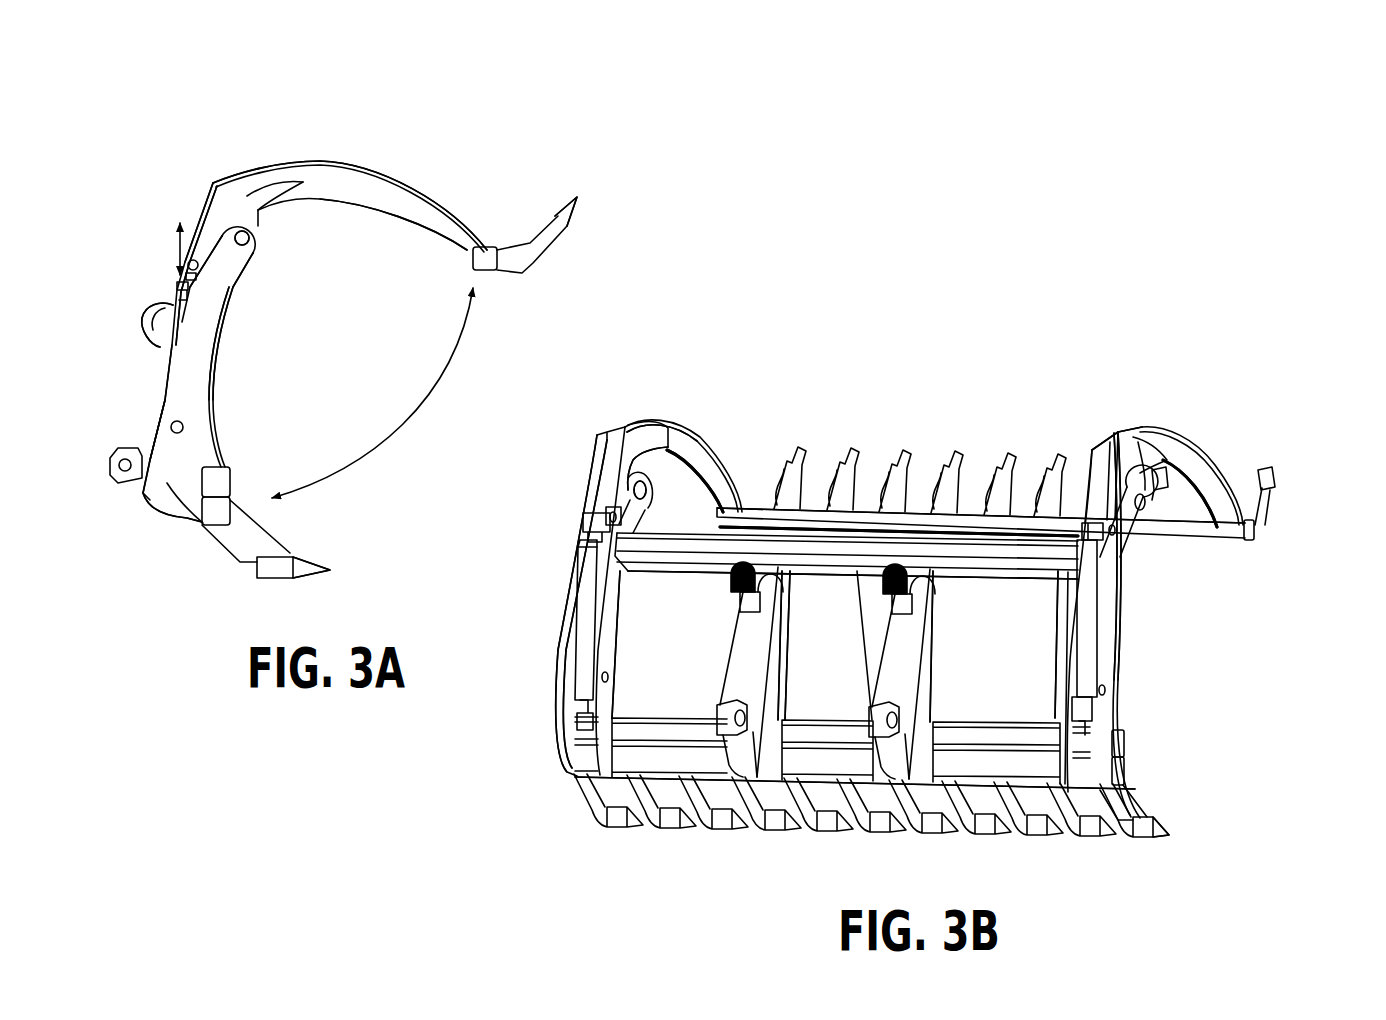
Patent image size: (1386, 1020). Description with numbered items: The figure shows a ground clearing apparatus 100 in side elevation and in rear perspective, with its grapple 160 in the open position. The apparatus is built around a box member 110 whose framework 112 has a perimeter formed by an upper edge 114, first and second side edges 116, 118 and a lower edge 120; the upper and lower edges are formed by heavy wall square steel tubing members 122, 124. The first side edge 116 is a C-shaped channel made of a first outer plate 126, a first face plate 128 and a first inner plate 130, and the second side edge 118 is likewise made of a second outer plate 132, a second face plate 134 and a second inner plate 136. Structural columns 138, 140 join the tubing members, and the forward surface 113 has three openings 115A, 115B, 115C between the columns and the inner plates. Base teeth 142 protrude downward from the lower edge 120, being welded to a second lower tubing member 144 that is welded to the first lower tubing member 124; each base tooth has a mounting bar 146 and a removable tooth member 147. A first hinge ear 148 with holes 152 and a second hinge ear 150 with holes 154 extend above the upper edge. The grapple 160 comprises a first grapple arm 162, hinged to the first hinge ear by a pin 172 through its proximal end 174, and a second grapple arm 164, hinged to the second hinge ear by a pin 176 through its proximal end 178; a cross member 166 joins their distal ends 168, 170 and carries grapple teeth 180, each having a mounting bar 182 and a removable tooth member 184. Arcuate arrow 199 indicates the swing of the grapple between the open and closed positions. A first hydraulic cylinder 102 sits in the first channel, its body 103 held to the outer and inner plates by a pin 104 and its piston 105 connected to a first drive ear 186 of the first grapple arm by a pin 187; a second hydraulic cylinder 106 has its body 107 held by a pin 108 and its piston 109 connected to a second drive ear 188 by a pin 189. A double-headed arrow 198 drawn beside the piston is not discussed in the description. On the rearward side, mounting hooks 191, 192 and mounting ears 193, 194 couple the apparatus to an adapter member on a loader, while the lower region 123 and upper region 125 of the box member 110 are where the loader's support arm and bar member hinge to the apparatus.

In FIG. 3A, the ground clearing apparatus 100 is at (112, 160).
In FIG. 3B, the ground clearing apparatus 100 is at (1212, 335).
In FIG. 3B, the first hydraulic cylinder 102 is at (1070, 597).
In FIG. 3A, the body 103 is at (173, 297).
In FIG. 3B, the body 103 is at (1093, 600).
In FIG. 3A, the pin 104 is at (184, 427).
In FIG. 3B, the pin 104 is at (1106, 690).
In FIG. 3A, the piston 105 is at (178, 288).
In FIG. 3B, the piston 105 is at (1077, 555).
In FIG. 3B, the second hydraulic cylinder 106 is at (568, 597).
In FIG. 3B, the body 107 is at (560, 663).
In FIG. 3B, the pin 108 is at (609, 677).
In FIG. 3B, the piston 109 is at (593, 535).
In FIG. 3A, the box member 110 is at (270, 360).
In FIG. 3B, the box member 110 is at (1163, 668).
In FIG. 3A, the framework 112 is at (240, 291).
In FIG. 3B, the framework 112 is at (665, 575).
In FIG. 3A, the forward surface 113 is at (217, 340).
In FIG. 3B, the upper edge 114 is at (702, 532).
In FIG. 3B, the opening 115A is at (1025, 704).
In FIG. 3B, the opening 115B is at (855, 674).
In FIG. 3B, the opening 115C is at (720, 632).
In FIG. 3A, the first side edge 116 is at (243, 273).
In FIG. 3B, the first side edge 116 is at (1122, 618).
In FIG. 3B, the second side edge 118 is at (557, 627).
In FIG. 3B, the lower edge 120 is at (1023, 833).
In FIG. 3B, the upper tubing member 122 is at (853, 553).
In FIG. 3A, the lower region 123 is at (160, 485).
In FIG. 3A, the first lower tubing member 124 is at (163, 483).
In FIG. 3B, the first lower tubing member 124 is at (823, 737).
In FIG. 3A, the upper region 125 is at (173, 370).
In FIG. 3A, the first outer plate 126 is at (187, 402).
In FIG. 3B, the first outer plate 126 is at (1115, 648).
In FIG. 3B, the first face plate 128 is at (1092, 718).
In FIG. 3B, the first inner plate 130 is at (1060, 655).
In FIG. 3B, the second outer plate 132 is at (570, 650).
In FIG. 3B, the second face plate 134 is at (585, 703).
In FIG. 3B, the second inner plate 136 is at (614, 650).
In FIG. 3B, the structural column 138 is at (935, 650).
In FIG. 3B, the structural column 140 is at (784, 633).
In FIG. 3A, the base teeth 142 is at (290, 560).
In FIG. 3B, the base teeth 142 is at (598, 820).
In FIG. 3A, the second lower tubing member 144 is at (213, 512).
In FIG. 3B, the second lower tubing member 144 is at (1125, 773).
In FIG. 3A, the mounting bar 146 is at (240, 562).
In FIG. 3B, the mounting bar 146 is at (1147, 803).
In FIG. 3A, the removable tooth member 147 is at (287, 578).
In FIG. 3B, the removable tooth member 147 is at (1170, 834).
In FIG. 3A, the first hinge ear 148 is at (250, 252).
In FIG. 3B, the first hinge ear 148 is at (1126, 487).
In FIG. 3B, the second hinge ear 150 is at (647, 477).
In FIG. 3A, the holes 152 is at (250, 238).
In FIG. 3B, the holes 154 is at (632, 498).
In FIG. 3A, the grapple 160 is at (478, 132).
In FIG. 3B, the grapple 160 is at (921, 437).
In FIG. 3A, the first grapple arm 162 is at (327, 158).
In FIG. 3B, the first grapple arm 162 is at (1203, 442).
In FIG. 3B, the second grapple arm 164 is at (703, 435).
In FIG. 3A, the cross member 166 is at (473, 267).
In FIG. 3B, the cross member 166 is at (960, 508).
In FIG. 3A, the distal end 168 is at (463, 233).
In FIG. 3B, the distal end 168 is at (1240, 503).
In FIG. 3B, the distal end 170 is at (745, 503).
In FIG. 3A, the pin 172 is at (229, 214).
In FIG. 3B, the pin 172 is at (1152, 480).
In FIG. 3B, the proximal end 174 is at (1118, 488).
In FIG. 3B, the pin 176 is at (634, 486).
In FIG. 3A, the proximal end 178 is at (212, 183).
In FIG. 3B, the proximal end 178 is at (645, 428).
In FIG. 3A, the grapple teeth 180 is at (571, 222).
In FIG. 3B, the grapple teeth 180 is at (887, 480).
In FIG. 3A, the mounting bar 182 is at (537, 263).
In FIG. 3A, the removable tooth member 184 is at (560, 203).
In FIG. 3A, the first drive ear 186 is at (207, 200).
In FIG. 3B, the first drive ear 186 is at (1125, 538).
In FIG. 3A, the pin 187 is at (196, 258).
In FIG. 3B, the pin 187 is at (1120, 548).
In FIG. 3B, the second drive ear 188 is at (647, 503).
In FIG. 3B, the pin 189 is at (623, 514).
In FIG. 3A, the mounting hook 191 is at (163, 340).
In FIG. 3B, the mounting hook 191 is at (915, 575).
In FIG. 3B, the mounting hook 192 is at (760, 570).
In FIG. 3A, the mounting ear 193 is at (130, 447).
In FIG. 3B, the mounting ear 193 is at (905, 717).
In FIG. 3B, the mounting ear 194 is at (722, 715).
In FIG. 3A, the motion arrow 198 is at (177, 250).
In FIG. 3A, the arcuate arrow 199 is at (423, 394).